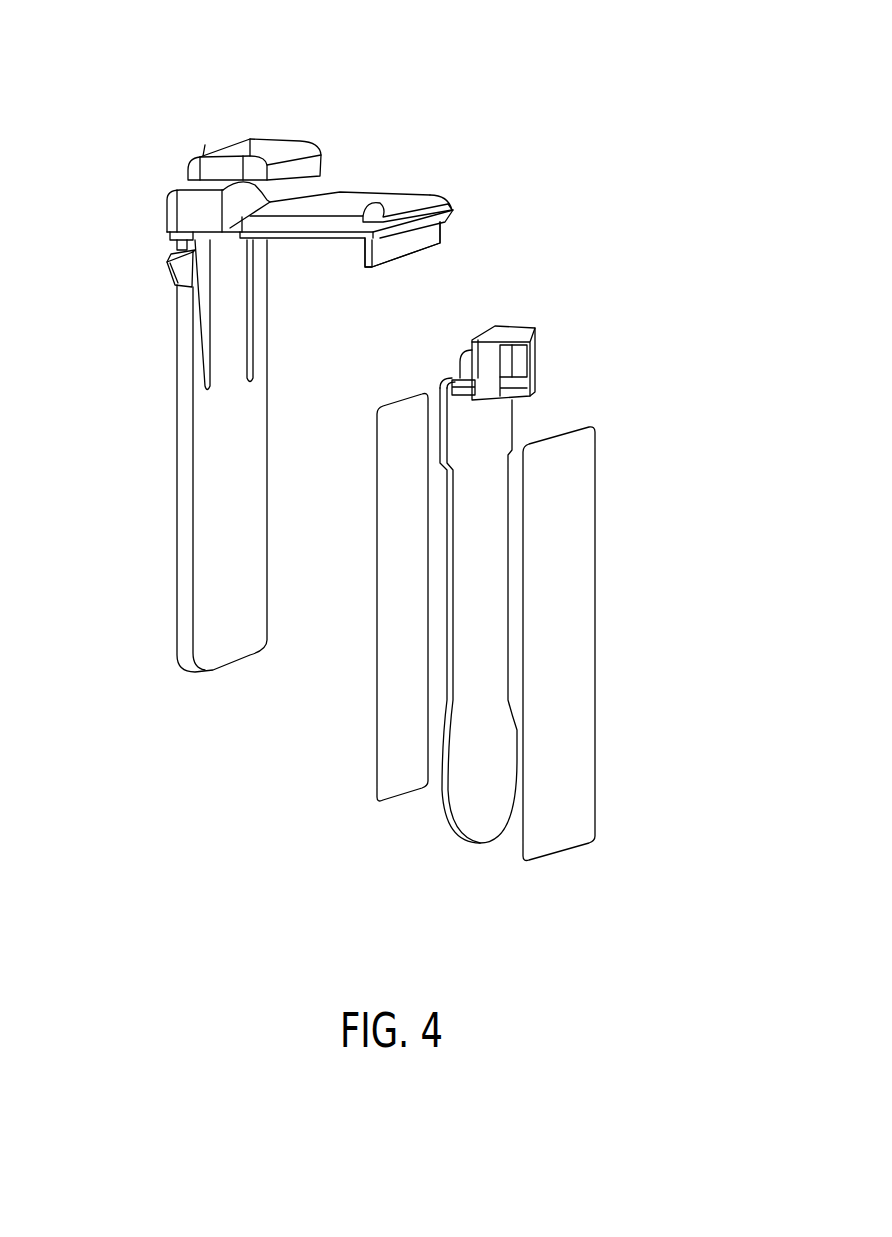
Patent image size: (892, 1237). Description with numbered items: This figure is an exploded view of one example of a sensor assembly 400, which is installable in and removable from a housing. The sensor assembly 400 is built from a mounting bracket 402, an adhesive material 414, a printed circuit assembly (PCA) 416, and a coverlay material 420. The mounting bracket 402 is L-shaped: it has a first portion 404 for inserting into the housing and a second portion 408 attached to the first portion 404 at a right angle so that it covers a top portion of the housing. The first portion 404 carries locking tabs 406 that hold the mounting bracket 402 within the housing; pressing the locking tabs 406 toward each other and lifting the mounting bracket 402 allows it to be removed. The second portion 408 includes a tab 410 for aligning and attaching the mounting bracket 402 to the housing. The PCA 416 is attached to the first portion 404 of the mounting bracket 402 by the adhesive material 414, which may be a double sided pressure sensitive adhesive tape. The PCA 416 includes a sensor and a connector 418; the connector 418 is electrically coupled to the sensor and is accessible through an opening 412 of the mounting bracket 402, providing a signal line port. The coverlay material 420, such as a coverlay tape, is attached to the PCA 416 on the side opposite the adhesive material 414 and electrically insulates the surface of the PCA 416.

The sensor assembly 400 is at (512, 96).
The mounting bracket 402 is at (170, 593).
The first portion 404 is at (207, 462).
The locking tabs 406 is at (185, 305).
The second portion 408 is at (347, 207).
The tab 410 is at (400, 252).
The opening 412 is at (258, 147).
The adhesive material 414 is at (400, 793).
The printed circuit assembly 416 is at (470, 823).
The connector 418 is at (518, 367).
The coverlay material 420 is at (583, 683).